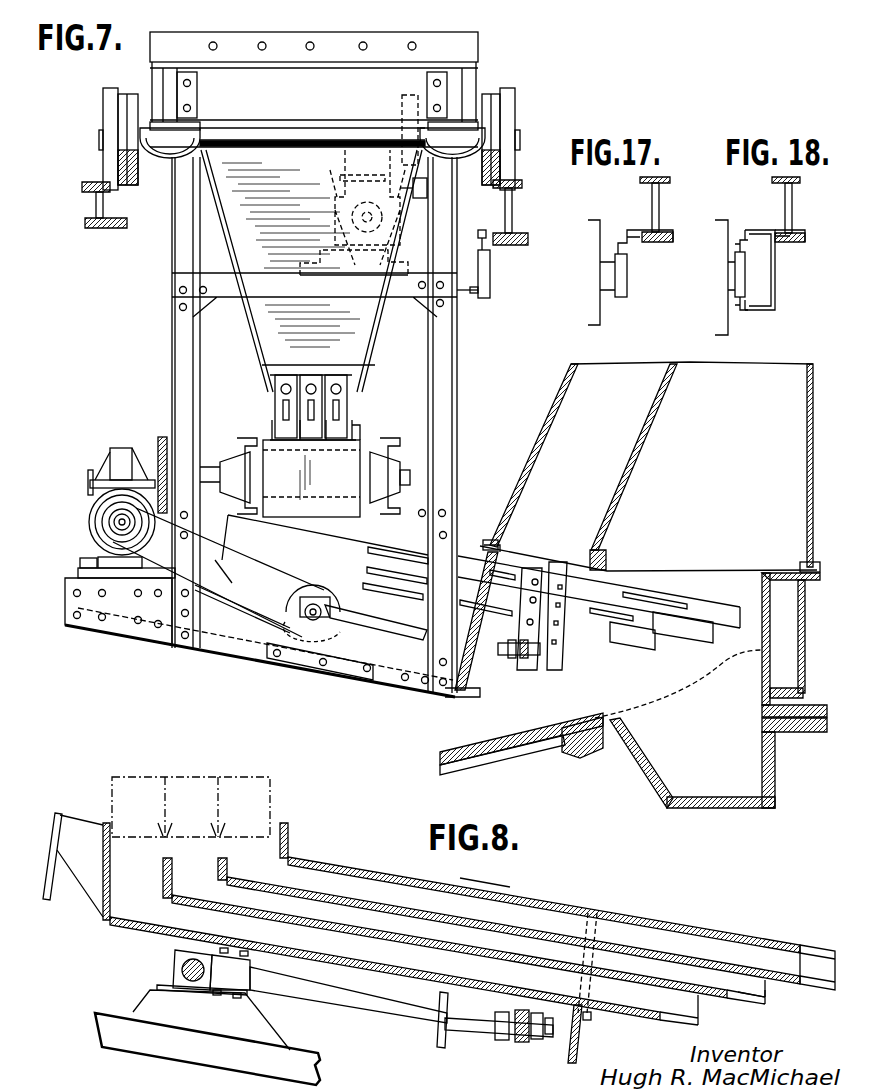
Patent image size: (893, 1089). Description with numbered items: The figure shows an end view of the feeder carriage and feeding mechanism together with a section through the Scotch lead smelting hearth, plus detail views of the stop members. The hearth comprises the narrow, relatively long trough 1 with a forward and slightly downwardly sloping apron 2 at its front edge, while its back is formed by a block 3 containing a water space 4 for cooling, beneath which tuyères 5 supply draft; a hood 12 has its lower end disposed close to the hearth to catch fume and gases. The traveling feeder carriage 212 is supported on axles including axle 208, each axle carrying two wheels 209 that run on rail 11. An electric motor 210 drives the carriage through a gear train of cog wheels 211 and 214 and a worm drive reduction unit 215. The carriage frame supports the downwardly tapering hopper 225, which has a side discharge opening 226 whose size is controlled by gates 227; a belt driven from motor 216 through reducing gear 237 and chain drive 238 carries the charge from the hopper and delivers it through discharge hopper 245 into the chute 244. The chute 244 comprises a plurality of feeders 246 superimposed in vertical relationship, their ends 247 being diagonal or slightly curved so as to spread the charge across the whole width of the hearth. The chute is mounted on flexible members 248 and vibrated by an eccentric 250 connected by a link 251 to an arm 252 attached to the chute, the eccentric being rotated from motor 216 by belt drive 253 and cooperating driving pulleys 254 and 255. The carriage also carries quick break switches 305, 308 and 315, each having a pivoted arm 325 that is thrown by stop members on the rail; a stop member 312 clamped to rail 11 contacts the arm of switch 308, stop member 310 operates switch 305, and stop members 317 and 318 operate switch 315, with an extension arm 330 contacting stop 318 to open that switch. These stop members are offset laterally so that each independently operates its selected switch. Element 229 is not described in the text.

In FIG. 7, the traveling feeder carriage 212 is at (296, 43).
In FIG. 7, the wheels 209 is at (113, 104).
In FIG. 7, the rail 11 is at (86, 226).
In FIG. 17, the rail 11 is at (662, 192).
In FIG. 18, the rail 11 is at (796, 192).
In FIG. 7, the axle 208 is at (316, 143).
In FIG. 7, the cog wheel 211 is at (441, 166).
In FIG. 7, the cog wheel 214 is at (440, 193).
In FIG. 7, the electric motor 210 is at (352, 213).
In FIG. 7, the stop member 312 is at (480, 251).
In FIG. 7, the hopper 225 is at (246, 240).
In FIG. 7, the worm drive reduction unit 215 is at (394, 259).
In FIG. 7, the pivoted arm 325 is at (491, 261).
In FIG. 18, the pivoted arm 325 is at (740, 240).
In FIG. 7, the switch 308 is at (489, 291).
In FIG. 7, the gate plates 229 is at (342, 378).
In FIG. 7, the gates 227 is at (332, 430).
In FIG. 7, the side discharge opening 226 is at (357, 431).
In FIG. 7, the discharge hopper 245 is at (342, 476).
In FIG. 8, the discharge hopper 245 is at (266, 806).
In FIG. 7, the chain drive 238 is at (162, 440).
In FIG. 7, the reducing gear 237 is at (108, 462).
In FIG. 7, the motor 216 is at (100, 512).
In FIG. 7, the driving pulley 255 is at (108, 525).
In FIG. 7, the chute 244 is at (481, 571).
In FIG. 8, the chute 244 is at (345, 858).
In FIG. 7, the flexible members 248 is at (502, 694).
In FIG. 8, the flexible members 248 is at (50, 897).
In FIG. 7, the link 251 is at (414, 632).
In FIG. 8, the link 251 is at (376, 1006).
In FIG. 7, the belt drive 253 is at (256, 612).
In FIG. 7, the driving pulley 254 is at (310, 633).
In FIG. 7, the eccentric 250 is at (320, 625).
In FIG. 8, the eccentric 250 is at (180, 970).
In FIG. 7, the arm 252 is at (535, 668).
In FIG. 8, the arm 252 is at (530, 1046).
In FIG. 7, the ends of feeders 247 is at (710, 618).
In FIG. 8, the ends of feeders 247 is at (812, 990).
In FIG. 7, the hood 12 is at (630, 458).
In FIG. 7, the block 3 is at (762, 590).
In FIG. 7, the water space 4 is at (787, 639).
In FIG. 7, the tuyères 5 is at (804, 702).
In FIG. 7, the apron 2 is at (500, 758).
In FIG. 7, the trough 1 is at (685, 729).
In FIG. 8, the feeders 246 is at (498, 933).
In FIG. 17, the stop member 310 is at (626, 232).
In FIG. 17, the switch 305 is at (627, 278).
In FIG. 18, the stop member 317 is at (760, 230).
In FIG. 18, the switch 315 is at (742, 267).
In FIG. 18, the stop member 318 is at (776, 292).
In FIG. 18, the extension arm 330 is at (742, 310).